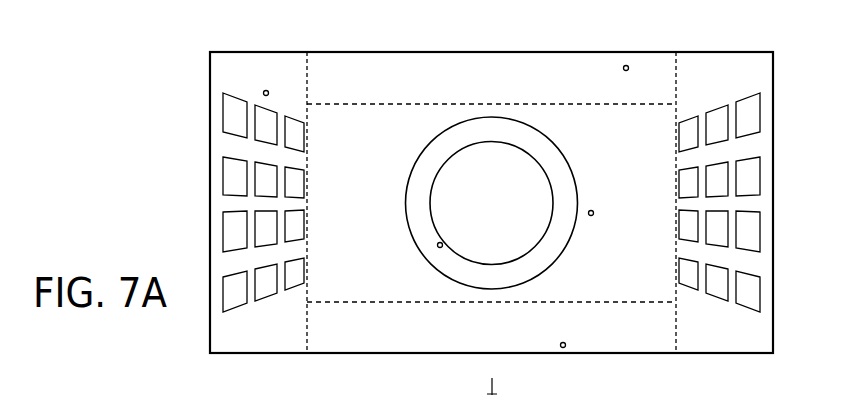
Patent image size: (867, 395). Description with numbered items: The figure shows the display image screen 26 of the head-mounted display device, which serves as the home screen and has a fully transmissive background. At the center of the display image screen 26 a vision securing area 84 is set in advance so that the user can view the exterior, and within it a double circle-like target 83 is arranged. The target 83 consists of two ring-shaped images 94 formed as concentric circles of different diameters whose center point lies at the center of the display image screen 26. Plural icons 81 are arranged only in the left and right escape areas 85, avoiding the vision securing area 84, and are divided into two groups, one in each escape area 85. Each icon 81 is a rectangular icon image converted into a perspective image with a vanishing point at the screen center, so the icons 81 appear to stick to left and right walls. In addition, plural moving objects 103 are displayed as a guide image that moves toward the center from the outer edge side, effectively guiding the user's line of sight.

The display image screen 26 is at (728, 53).
The icons 81 is at (235, 233).
The target 83 is at (423, 148).
The vision securing area 84 is at (553, 104).
The escape areas 85 is at (281, 52).
The ring-shaped images 94 is at (473, 143).
The moving objects 103 is at (590, 216).